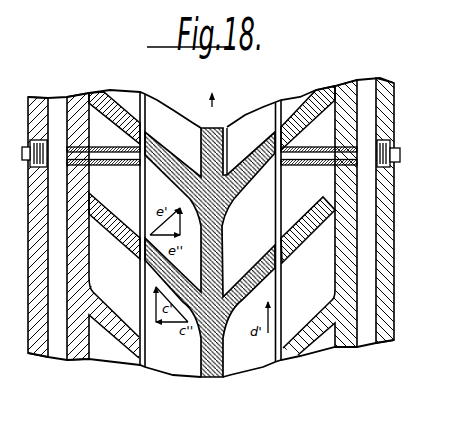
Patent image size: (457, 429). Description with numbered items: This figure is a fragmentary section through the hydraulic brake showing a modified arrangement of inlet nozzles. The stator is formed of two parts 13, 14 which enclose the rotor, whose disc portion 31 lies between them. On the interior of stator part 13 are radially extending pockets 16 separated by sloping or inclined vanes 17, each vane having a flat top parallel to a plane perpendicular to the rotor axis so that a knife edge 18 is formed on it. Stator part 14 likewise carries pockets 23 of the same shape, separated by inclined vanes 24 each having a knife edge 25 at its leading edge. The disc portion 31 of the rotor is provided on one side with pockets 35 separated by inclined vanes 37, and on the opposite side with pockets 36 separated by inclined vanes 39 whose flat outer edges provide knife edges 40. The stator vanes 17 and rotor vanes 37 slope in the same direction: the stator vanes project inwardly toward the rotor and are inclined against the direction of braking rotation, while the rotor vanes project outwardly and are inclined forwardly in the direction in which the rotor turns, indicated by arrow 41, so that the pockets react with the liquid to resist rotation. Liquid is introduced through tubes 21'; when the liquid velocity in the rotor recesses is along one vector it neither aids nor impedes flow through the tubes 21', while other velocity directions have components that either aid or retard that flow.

The stator part 13 is at (36, 296).
The stator part 14 is at (394, 98).
The pockets 16 is at (128, 195).
The vanes 17 is at (120, 112).
The knife edge 18 is at (133, 258).
The tubes 21' is at (221, 111).
The pockets 23 is at (310, 189).
The vanes 24 is at (305, 110).
The knife edge 25 is at (284, 147).
The disc portion 31 is at (218, 127).
The pockets 35 is at (152, 107).
The pockets 36 is at (251, 245).
The vanes 37 is at (147, 138).
The vanes 39 is at (258, 150).
The knife edges 40 is at (275, 131).
The arrow 41 is at (216, 100).